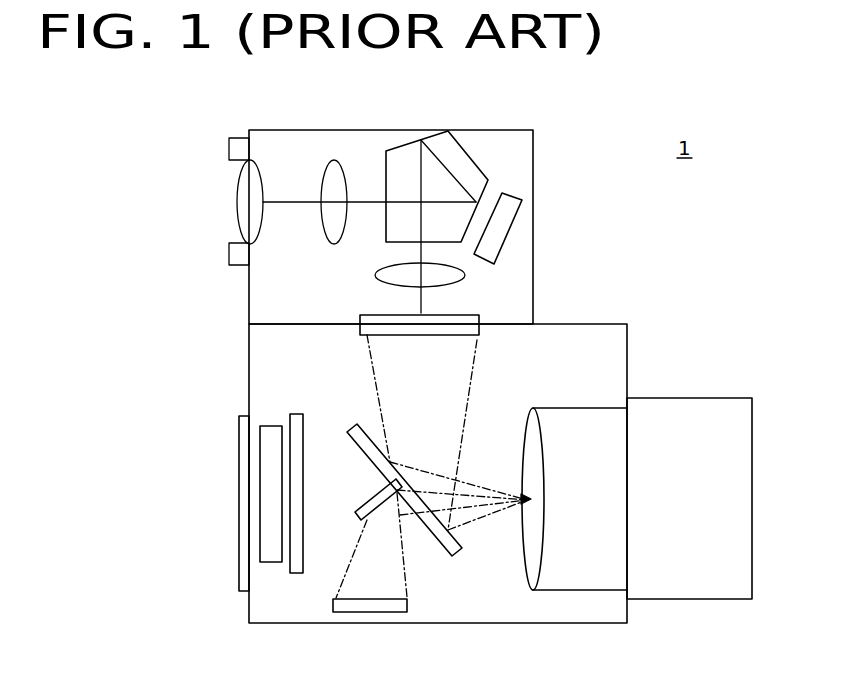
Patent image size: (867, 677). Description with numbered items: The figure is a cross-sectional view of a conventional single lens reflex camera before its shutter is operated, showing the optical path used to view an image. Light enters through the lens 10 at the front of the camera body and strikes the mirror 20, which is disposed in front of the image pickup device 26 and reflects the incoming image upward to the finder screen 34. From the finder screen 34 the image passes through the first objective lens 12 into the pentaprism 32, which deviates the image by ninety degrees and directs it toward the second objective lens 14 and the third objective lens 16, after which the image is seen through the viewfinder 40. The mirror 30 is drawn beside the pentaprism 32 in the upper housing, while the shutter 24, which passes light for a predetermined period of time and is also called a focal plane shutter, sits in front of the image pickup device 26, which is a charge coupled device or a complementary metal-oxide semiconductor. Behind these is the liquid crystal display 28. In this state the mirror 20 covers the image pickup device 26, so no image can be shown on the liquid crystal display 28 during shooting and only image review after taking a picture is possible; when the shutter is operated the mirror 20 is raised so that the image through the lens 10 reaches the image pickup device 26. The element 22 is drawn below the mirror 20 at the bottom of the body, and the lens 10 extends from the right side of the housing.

The lens 10 is at (725, 408).
The first objective lens 12 is at (376, 273).
The second objective lens 14 is at (333, 165).
The third objective lens 16 is at (240, 214).
The mirror 20 is at (350, 428).
The display device 22 is at (376, 612).
The shutter 24 is at (296, 518).
The image pickup device 26 is at (268, 483).
The liquid crystal display (LCD) 28 is at (239, 452).
The reflecting mirror 30 is at (515, 230).
The pentaprism 32 is at (473, 150).
The finder screen 34 is at (460, 335).
The viewfinder 40 is at (229, 150).